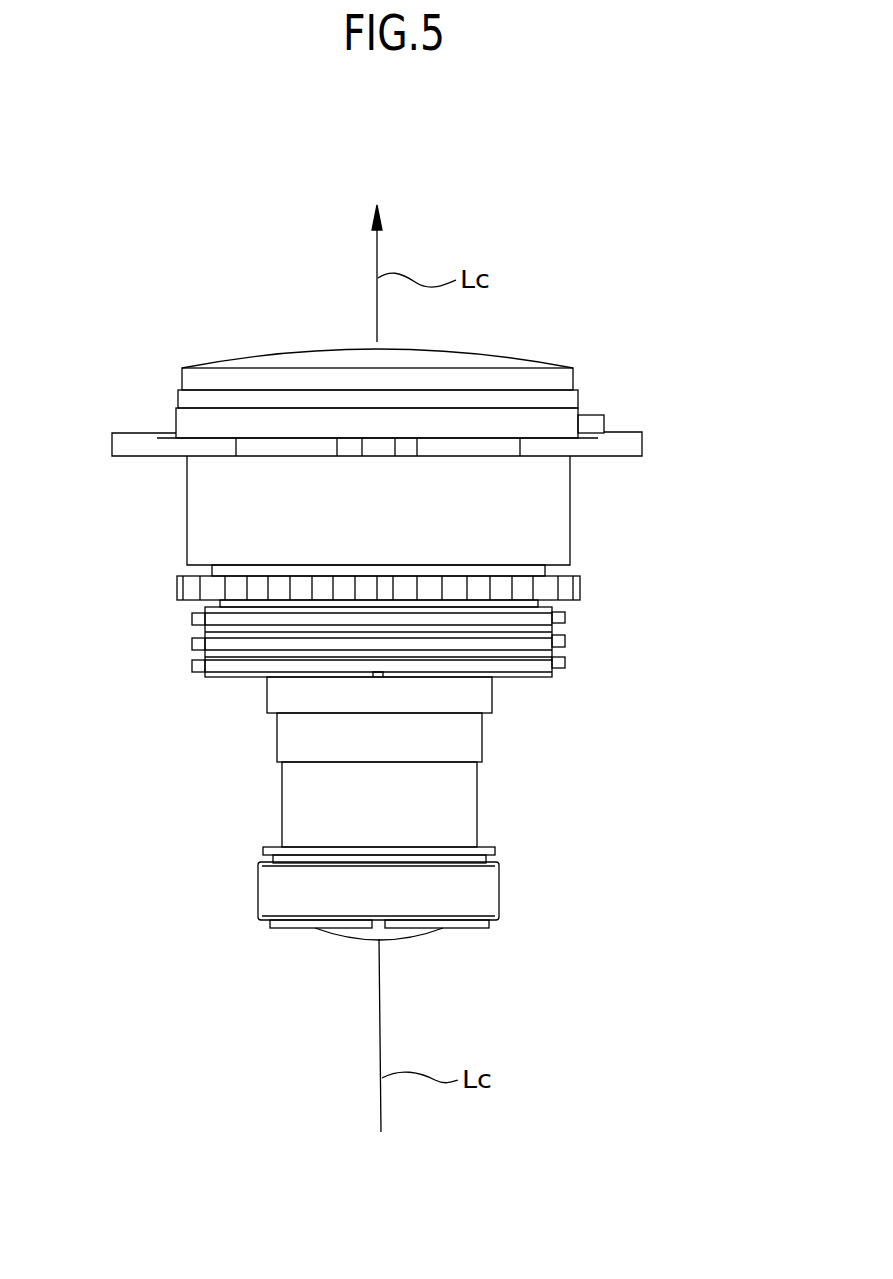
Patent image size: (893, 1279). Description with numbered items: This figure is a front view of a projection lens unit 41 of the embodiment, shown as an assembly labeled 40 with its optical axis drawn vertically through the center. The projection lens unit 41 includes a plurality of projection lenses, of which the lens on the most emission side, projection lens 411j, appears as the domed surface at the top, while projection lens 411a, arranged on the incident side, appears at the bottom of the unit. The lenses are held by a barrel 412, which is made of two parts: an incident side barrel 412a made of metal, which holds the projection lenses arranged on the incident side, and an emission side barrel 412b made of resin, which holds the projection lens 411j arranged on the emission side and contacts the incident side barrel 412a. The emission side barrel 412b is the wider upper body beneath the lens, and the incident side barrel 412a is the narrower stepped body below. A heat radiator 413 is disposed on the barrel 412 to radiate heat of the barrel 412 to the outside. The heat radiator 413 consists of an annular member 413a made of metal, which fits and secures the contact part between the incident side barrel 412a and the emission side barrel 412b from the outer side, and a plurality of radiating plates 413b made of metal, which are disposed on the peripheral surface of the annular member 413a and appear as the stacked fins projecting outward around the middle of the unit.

The lens unit 40 is at (108, 193).
The projection lens unit 41 is at (533, 336).
The projection lens 411j is at (264, 363).
The projection lens 411a is at (412, 928).
The barrel 412 is at (750, 558).
The incident side barrel 412a is at (458, 803).
The emission side barrel 412b is at (542, 525).
The heat radiator 413 is at (82, 615).
The annular member 413a is at (247, 678).
The radiating plates 413b is at (193, 618).